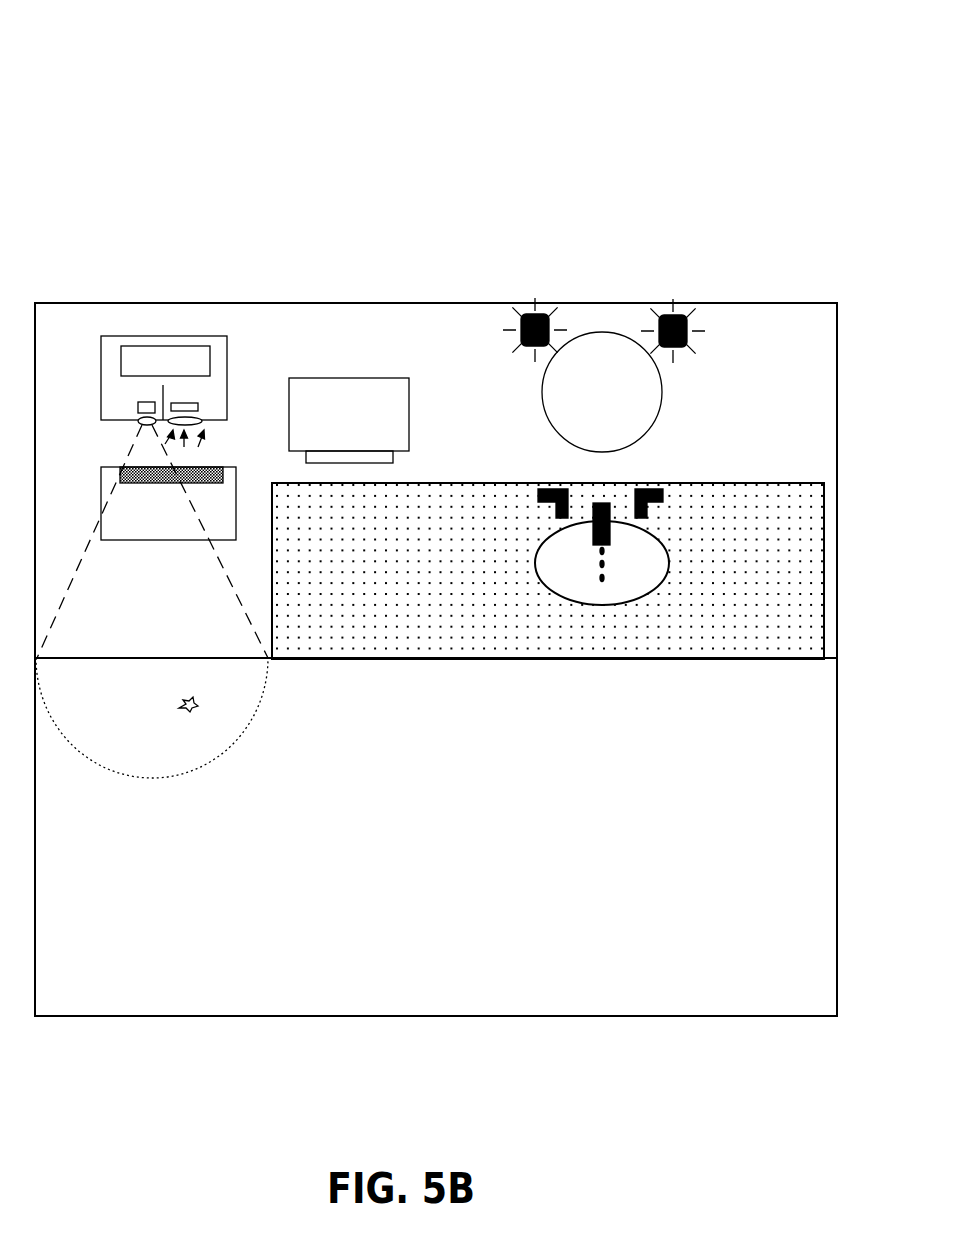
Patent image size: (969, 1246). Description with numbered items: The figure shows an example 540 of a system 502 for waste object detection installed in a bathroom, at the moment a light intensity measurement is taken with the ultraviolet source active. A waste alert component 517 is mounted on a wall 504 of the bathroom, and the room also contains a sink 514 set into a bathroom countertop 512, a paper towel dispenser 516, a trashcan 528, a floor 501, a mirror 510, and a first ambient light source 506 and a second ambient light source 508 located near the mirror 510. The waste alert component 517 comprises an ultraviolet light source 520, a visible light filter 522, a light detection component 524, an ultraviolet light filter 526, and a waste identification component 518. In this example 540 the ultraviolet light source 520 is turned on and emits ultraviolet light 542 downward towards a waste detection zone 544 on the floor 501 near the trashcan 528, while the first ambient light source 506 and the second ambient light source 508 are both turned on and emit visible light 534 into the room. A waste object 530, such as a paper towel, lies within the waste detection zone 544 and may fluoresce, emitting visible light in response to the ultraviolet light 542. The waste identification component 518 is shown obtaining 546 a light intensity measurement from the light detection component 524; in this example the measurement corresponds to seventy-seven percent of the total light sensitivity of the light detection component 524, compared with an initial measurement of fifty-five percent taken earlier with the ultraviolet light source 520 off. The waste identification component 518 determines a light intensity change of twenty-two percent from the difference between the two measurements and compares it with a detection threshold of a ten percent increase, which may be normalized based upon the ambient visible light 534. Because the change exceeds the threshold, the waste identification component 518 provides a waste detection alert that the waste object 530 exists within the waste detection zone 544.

The floor 501 is at (683, 782).
The system 502 is at (180, 280).
The wall 504 is at (335, 303).
The first ambient light source 506 is at (531, 314).
The second ambient light source 508 is at (680, 314).
The mirror 510 is at (577, 338).
The bathroom countertop 512 is at (700, 483).
The sink 514 is at (578, 466).
The paper towel dispenser 516 is at (322, 378).
The waste alert component 517 is at (227, 346).
The waste identification component 518 is at (128, 346).
The ultraviolet light source 520 is at (142, 401).
The visible light filter 522 is at (143, 417).
The light detection component 524 is at (197, 402).
The ultraviolet light filter 526 is at (200, 418).
The trashcan 528 is at (101, 467).
The waste object 530 is at (184, 709).
The visible light 534 is at (496, 382).
The example 540 is at (188, 40).
The ultraviolet light 542 is at (77, 573).
The waste detection zone 544 is at (221, 757).
The obtaining 546 is at (216, 449).